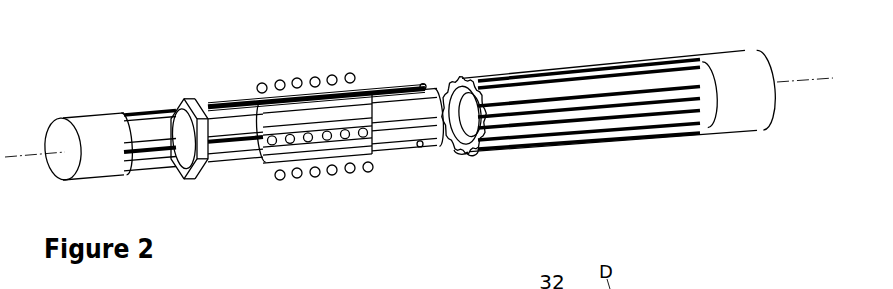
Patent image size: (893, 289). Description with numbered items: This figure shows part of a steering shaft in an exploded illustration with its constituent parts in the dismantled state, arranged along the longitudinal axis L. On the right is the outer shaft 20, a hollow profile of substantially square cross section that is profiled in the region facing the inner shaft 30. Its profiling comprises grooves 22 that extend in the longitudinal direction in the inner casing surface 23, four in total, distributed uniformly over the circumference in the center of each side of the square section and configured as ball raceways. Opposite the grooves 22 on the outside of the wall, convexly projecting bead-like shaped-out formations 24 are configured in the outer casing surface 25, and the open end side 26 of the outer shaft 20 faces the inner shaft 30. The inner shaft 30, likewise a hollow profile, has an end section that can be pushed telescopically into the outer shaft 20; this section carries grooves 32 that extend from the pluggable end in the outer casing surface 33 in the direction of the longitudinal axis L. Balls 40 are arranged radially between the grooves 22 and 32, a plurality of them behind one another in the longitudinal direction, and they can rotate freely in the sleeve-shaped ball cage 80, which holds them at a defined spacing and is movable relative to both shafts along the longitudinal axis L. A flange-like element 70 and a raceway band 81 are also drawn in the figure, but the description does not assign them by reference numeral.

The outer shaft 20 is at (600, 83).
The grooves 22 is at (462, 152).
The inner casing surface 23 is at (470, 153).
The bead-like shaped-out formations 24 is at (572, 72).
The outer casing surface 25 is at (640, 87).
The end side 26 is at (447, 87).
The inner shaft 30 is at (218, 123).
The grooves 32 is at (400, 125).
The outer casing surface 33 is at (437, 100).
The balls 40 is at (295, 80).
The flange nut 70 is at (185, 98).
The ball cage 80 is at (345, 115).
The ball raceway 81 is at (257, 100).
The longitudinal axis L is at (813, 80).